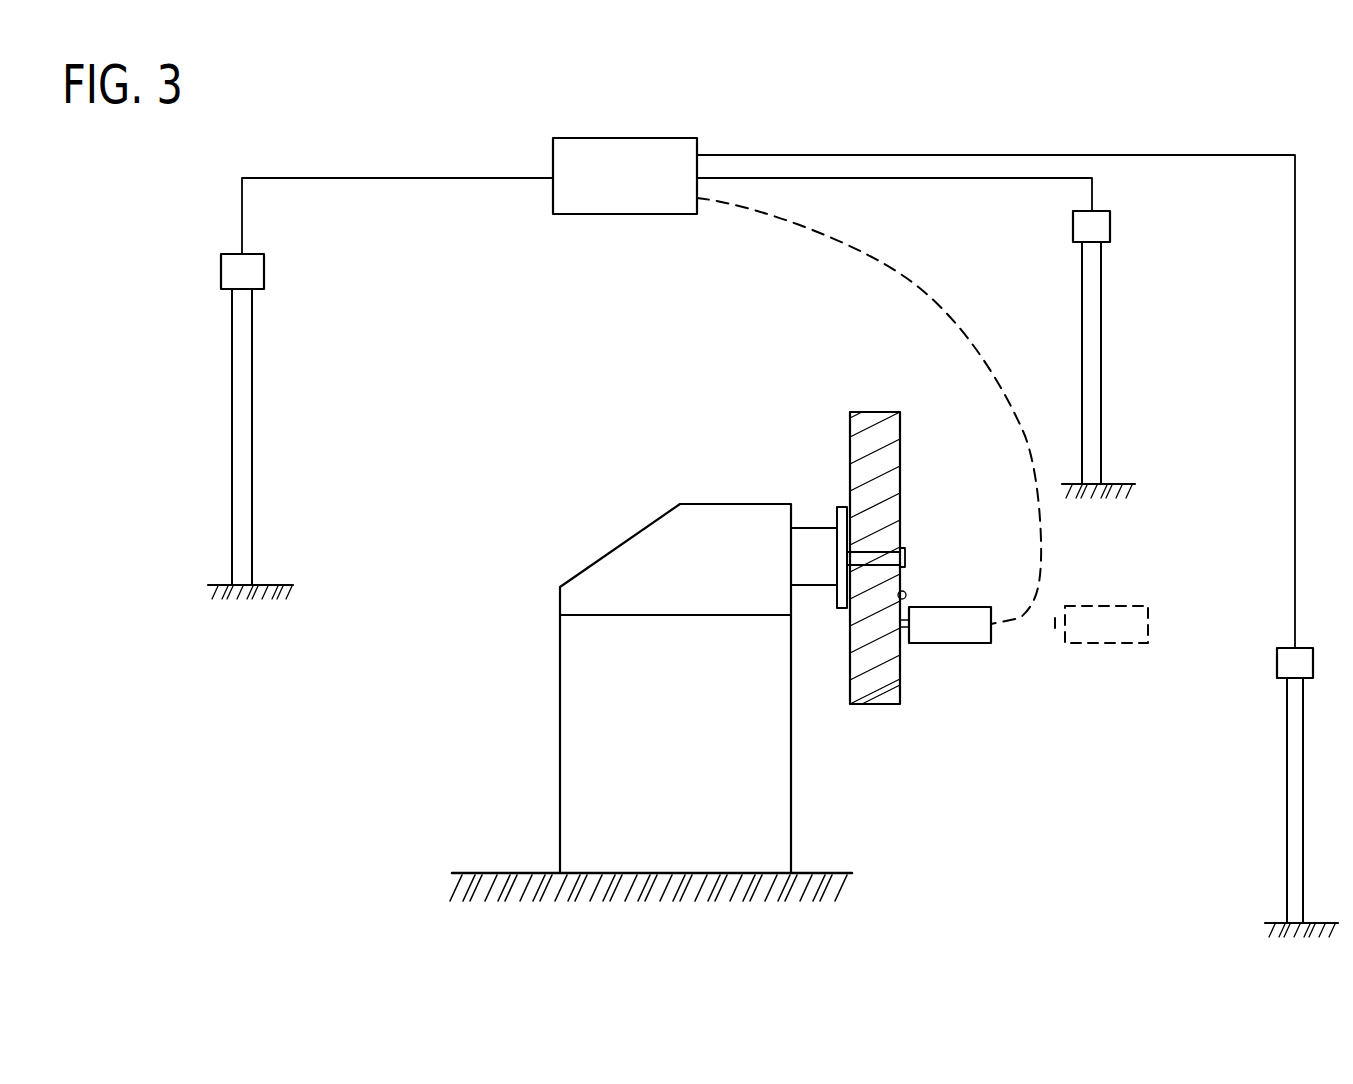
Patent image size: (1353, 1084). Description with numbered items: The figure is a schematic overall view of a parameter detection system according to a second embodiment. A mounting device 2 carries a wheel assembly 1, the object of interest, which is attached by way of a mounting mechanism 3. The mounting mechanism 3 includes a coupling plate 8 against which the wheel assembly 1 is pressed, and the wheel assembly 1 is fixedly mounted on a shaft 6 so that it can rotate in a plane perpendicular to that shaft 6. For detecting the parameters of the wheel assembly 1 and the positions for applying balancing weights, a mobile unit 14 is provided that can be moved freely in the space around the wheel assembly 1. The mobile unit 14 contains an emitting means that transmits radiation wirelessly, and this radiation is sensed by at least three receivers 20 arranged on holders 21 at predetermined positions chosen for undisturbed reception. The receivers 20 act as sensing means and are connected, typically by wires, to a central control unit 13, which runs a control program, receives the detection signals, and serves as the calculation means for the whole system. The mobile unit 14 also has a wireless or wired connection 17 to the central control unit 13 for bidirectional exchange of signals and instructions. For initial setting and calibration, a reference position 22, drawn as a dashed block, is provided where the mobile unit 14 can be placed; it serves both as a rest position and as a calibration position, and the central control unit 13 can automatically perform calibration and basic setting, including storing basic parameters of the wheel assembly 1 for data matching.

The wheel assembly 1 is at (912, 466).
The mounting device 2 is at (598, 504).
The mounting mechanism 3 is at (804, 503).
The shaft 6 is at (895, 557).
The coupling plate 8 is at (840, 507).
The central control unit 13 is at (575, 215).
The mobile unit 14 is at (945, 643).
The connection 17 is at (905, 275).
The receivers 20 is at (264, 274).
The holders 21 is at (252, 380).
The reference position 22 is at (1110, 643).